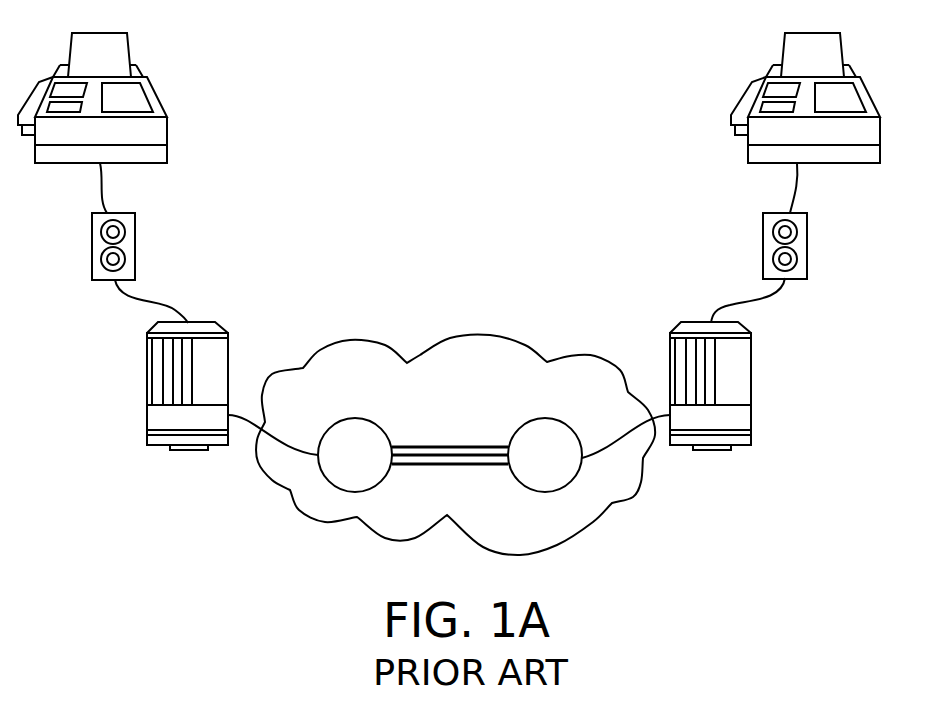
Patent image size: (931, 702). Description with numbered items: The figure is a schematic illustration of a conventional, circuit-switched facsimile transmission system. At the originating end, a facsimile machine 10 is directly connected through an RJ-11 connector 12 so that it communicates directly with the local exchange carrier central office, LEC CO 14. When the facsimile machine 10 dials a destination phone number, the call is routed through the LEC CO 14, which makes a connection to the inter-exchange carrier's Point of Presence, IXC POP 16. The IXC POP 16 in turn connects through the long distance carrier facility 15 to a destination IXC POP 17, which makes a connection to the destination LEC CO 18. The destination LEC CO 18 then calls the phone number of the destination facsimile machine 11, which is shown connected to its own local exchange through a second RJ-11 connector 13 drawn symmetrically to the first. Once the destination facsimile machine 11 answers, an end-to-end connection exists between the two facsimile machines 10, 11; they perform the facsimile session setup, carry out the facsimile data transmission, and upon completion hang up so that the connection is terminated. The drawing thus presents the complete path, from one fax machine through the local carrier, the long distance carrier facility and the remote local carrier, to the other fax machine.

The facsimile machine 10 is at (130, 47).
The destination facsimile machine 11 is at (843, 47).
The RJ-11 connector 12 is at (135, 230).
The RJ-11 jack 13 is at (807, 230).
The LEC CO 14 is at (228, 332).
The long distance carrier facility 15 is at (503, 333).
The IXC POP 16 is at (322, 478).
The destination IXC POP 17 is at (573, 482).
The destination LEC CO 18 is at (681, 323).